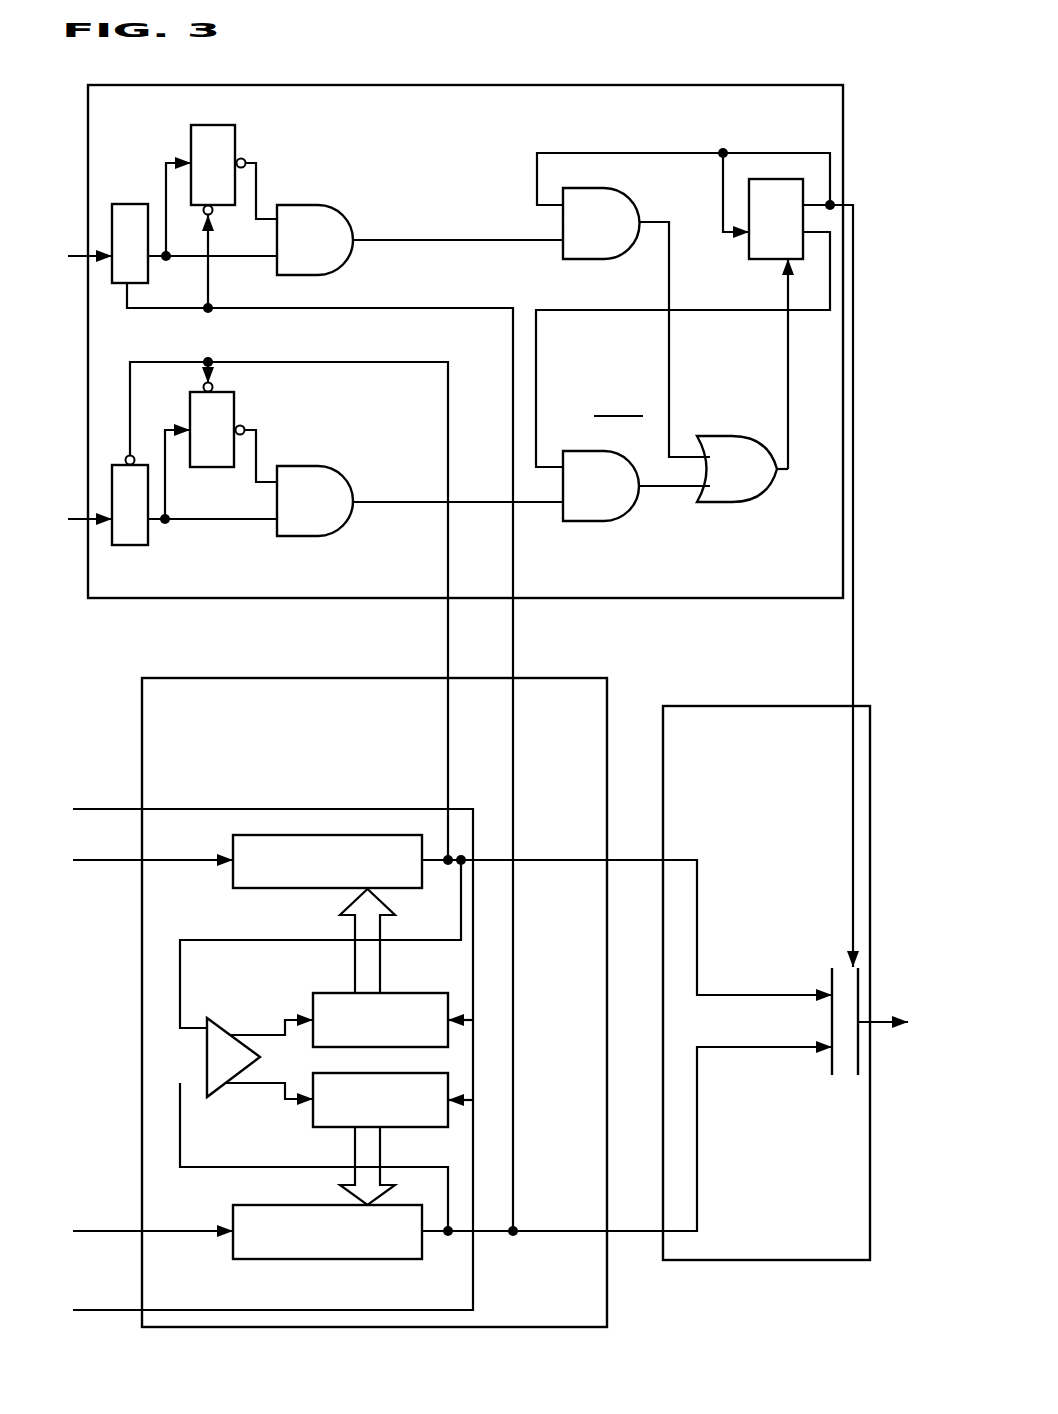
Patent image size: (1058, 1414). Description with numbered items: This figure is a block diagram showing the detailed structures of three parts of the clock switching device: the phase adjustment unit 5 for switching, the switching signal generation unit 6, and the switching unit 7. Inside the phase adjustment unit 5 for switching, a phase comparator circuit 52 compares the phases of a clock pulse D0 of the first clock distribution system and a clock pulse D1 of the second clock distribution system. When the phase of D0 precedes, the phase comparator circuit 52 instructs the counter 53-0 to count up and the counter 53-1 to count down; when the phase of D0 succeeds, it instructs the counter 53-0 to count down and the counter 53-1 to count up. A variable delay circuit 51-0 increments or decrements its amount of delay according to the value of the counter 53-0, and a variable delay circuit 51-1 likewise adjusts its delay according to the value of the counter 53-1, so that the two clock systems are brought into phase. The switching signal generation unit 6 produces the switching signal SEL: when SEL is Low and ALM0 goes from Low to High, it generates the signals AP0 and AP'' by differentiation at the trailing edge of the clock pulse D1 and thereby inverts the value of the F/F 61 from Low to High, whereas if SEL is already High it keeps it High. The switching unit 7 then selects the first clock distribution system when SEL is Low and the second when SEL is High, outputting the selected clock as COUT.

The switching signal generation unit 6 is at (279, 85).
The F/F 61 is at (772, 179).
The phase adjustment unit for switching 5 is at (235, 677).
The variable delay circuit 51-1 is at (307, 835).
The variable delay circuit 51-0 is at (233, 1250).
The phase comparator circuit 52 is at (213, 1054).
The counter 53-1 is at (450, 1011).
The counter 53-0 is at (450, 1092).
The switching unit 7 is at (722, 706).